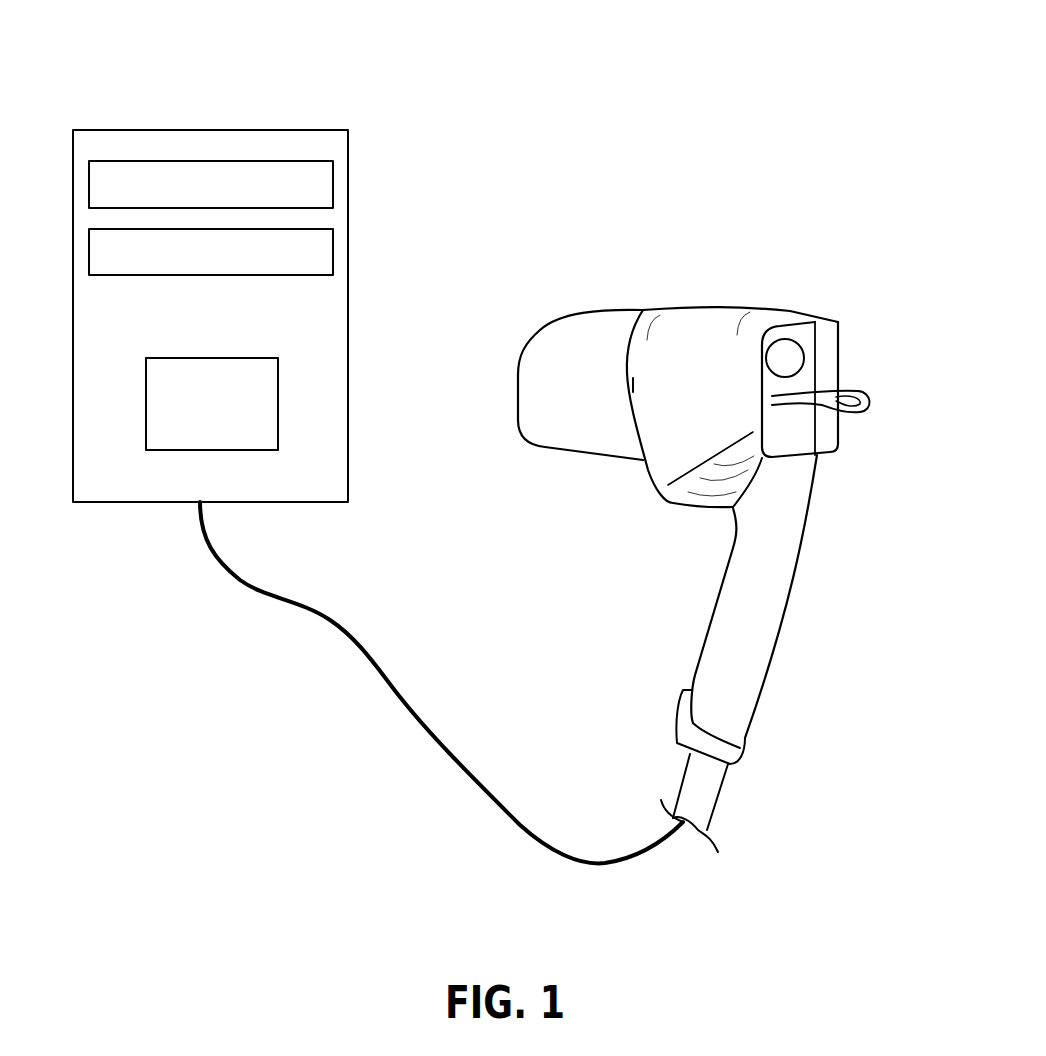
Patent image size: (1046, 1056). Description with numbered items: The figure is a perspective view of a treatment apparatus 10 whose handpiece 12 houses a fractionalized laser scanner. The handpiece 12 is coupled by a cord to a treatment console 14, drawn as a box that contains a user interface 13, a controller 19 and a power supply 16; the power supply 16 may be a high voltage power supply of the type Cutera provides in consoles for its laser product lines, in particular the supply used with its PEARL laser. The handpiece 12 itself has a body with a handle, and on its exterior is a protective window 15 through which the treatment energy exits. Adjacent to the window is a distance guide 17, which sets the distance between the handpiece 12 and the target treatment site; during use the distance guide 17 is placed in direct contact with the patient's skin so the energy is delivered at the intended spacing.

The treatment apparatus 10 is at (548, 108).
The handpiece 12 is at (714, 579).
The user interface 13 is at (193, 160).
The treatment console 14 is at (312, 457).
The protective window 15 is at (785, 358).
The power supply 16 is at (278, 412).
The distance guide 17 is at (856, 416).
The controller 19 is at (333, 248).